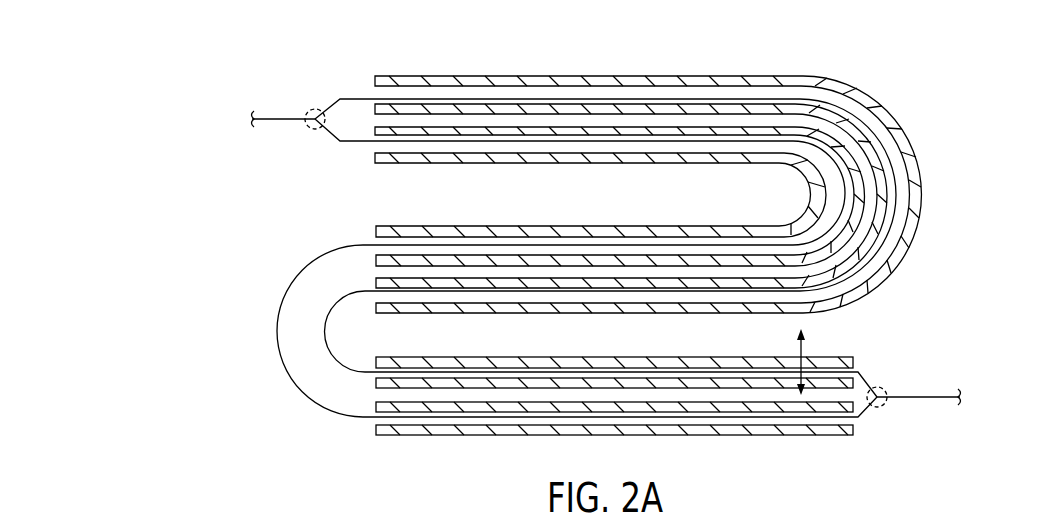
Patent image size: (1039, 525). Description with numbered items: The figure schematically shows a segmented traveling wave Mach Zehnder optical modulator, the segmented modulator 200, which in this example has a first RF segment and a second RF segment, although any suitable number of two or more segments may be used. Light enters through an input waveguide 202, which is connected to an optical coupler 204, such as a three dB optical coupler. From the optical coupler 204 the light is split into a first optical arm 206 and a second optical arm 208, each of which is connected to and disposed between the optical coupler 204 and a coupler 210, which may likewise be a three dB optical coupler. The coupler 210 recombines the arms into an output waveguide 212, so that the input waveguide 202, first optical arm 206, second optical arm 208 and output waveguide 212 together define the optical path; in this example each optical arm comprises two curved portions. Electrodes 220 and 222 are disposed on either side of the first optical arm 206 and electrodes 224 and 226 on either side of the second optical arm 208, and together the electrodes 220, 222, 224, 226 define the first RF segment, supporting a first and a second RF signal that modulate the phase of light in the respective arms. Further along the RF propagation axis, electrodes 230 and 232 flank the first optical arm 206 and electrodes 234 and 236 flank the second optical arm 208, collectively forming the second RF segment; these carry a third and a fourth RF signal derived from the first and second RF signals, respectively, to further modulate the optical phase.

The segmented modulator 200 is at (148, 280).
The input waveguide 202 is at (280, 116).
The optical coupler 204 is at (310, 132).
The first optical arm 206 is at (332, 103).
The second optical arm 208 is at (337, 146).
The coupler 210 is at (880, 364).
The output waveguide 212 is at (913, 395).
The electrode 220 is at (907, 137).
The electrode 222 is at (862, 162).
The electrode 224 is at (835, 175).
The electrode 226 is at (807, 198).
The electrode 230 is at (460, 364).
The electrode 232 is at (378, 390).
The electrode 234 is at (607, 404).
The electrode 236 is at (770, 436).